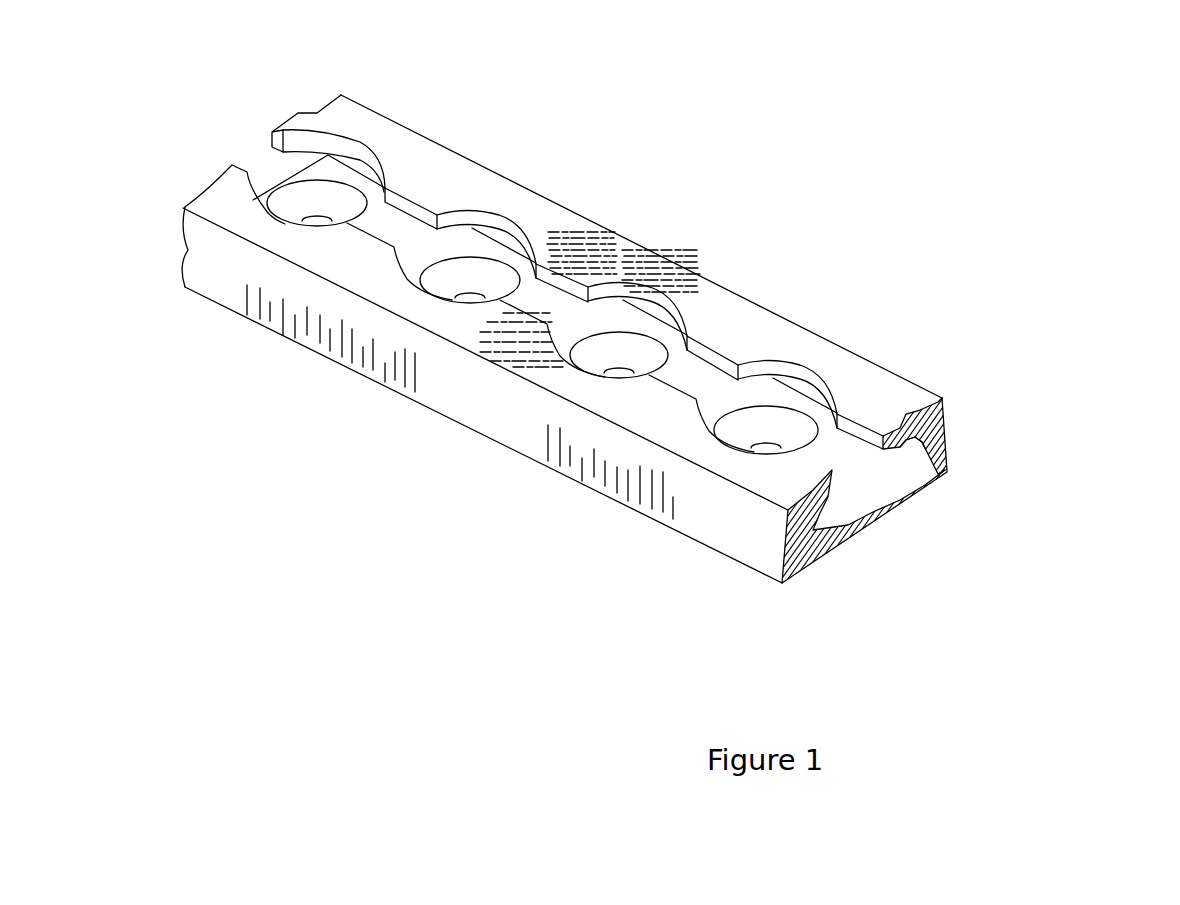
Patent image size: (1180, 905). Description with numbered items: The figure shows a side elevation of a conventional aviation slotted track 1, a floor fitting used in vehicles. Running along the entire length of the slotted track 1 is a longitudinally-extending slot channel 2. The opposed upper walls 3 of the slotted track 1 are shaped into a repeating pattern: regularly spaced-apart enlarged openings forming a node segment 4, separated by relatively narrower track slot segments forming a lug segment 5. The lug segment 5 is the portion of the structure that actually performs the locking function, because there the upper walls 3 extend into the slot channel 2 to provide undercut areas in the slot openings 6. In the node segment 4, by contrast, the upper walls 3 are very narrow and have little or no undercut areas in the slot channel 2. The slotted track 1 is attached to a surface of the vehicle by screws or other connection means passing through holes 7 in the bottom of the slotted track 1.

The slotted track 1 is at (814, 296).
The slot channel 2 is at (860, 475).
The upper walls 3 is at (790, 477).
The enlarged openings (node segment) 4 is at (352, 178).
The track slot segments (lug segment) 5 is at (398, 232).
The slot openings 6 is at (909, 448).
The holes 7 is at (776, 447).